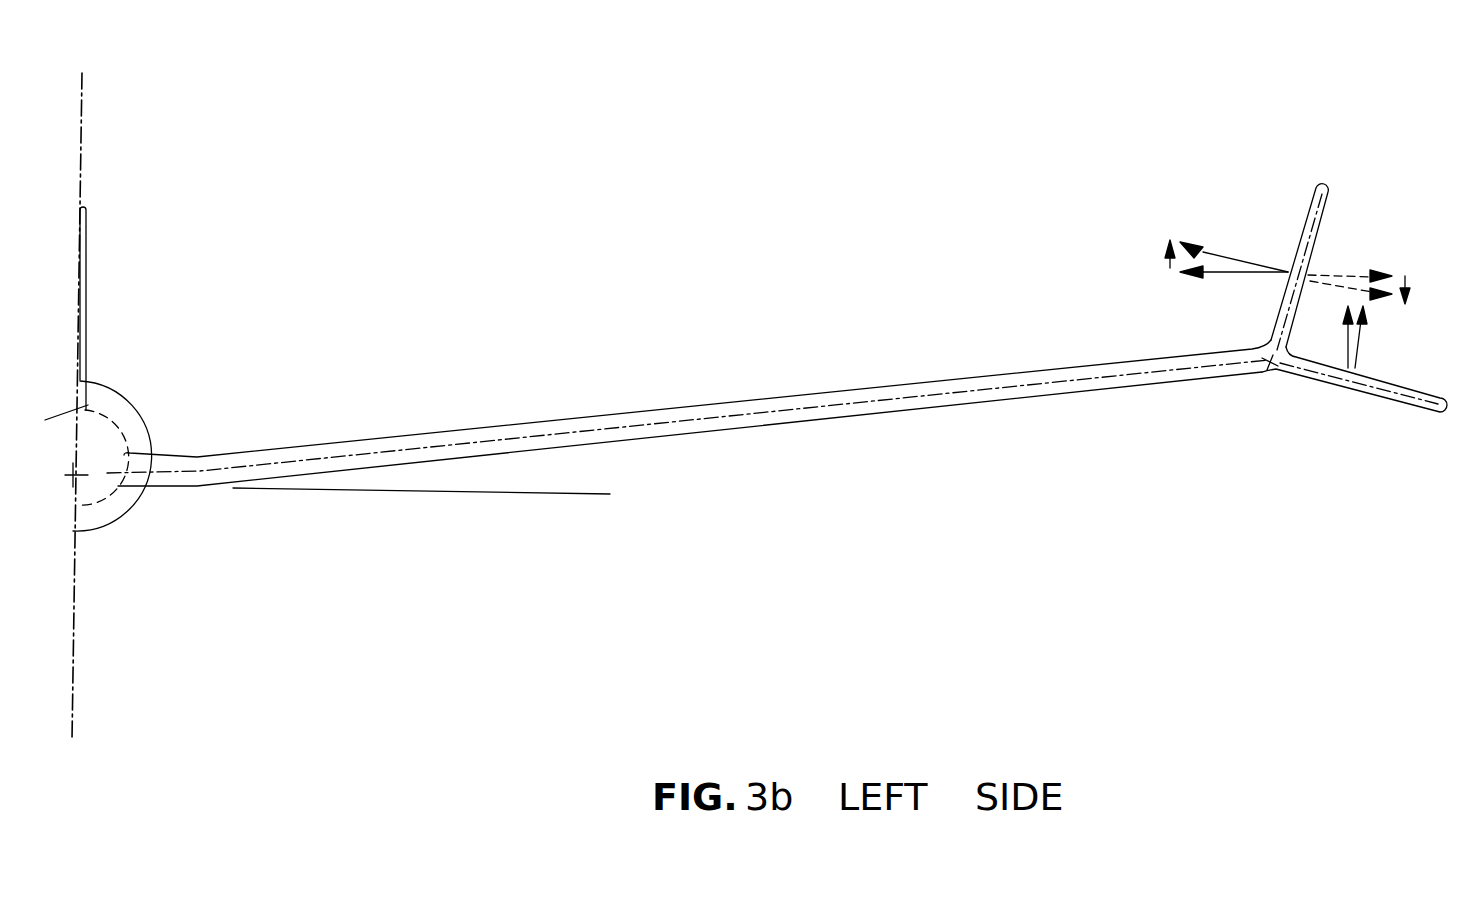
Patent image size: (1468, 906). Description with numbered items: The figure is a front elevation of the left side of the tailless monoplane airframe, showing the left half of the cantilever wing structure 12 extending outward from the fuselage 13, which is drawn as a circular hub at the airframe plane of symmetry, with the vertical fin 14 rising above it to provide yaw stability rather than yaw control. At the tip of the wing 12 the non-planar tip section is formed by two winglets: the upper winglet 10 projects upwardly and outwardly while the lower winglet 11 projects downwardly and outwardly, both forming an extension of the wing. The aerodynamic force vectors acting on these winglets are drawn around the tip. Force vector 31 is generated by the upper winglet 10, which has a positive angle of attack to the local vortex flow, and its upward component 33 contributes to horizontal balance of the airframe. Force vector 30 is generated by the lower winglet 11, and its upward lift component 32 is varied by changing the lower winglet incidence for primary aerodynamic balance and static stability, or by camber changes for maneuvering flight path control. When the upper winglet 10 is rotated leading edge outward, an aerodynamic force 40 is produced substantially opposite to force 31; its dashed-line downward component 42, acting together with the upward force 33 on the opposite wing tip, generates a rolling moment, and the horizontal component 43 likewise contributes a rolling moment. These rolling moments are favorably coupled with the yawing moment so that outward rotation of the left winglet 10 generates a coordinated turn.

The upper winglet 10 is at (1316, 196).
The lower winglet 11 is at (1433, 412).
The wing structure 12 is at (797, 393).
The fuselage 13 is at (130, 402).
The vertical fin 14 is at (86, 252).
The aerodynamic force vector 30 is at (1371, 337).
The aerodynamic force vector 31 is at (1234, 251).
The upward lift component 32 is at (1335, 337).
The upward component 33 is at (1154, 255).
The aerodynamic force 40 is at (1351, 296).
The downward force component 42 is at (1421, 290).
The horizontal component 43 is at (1350, 265).